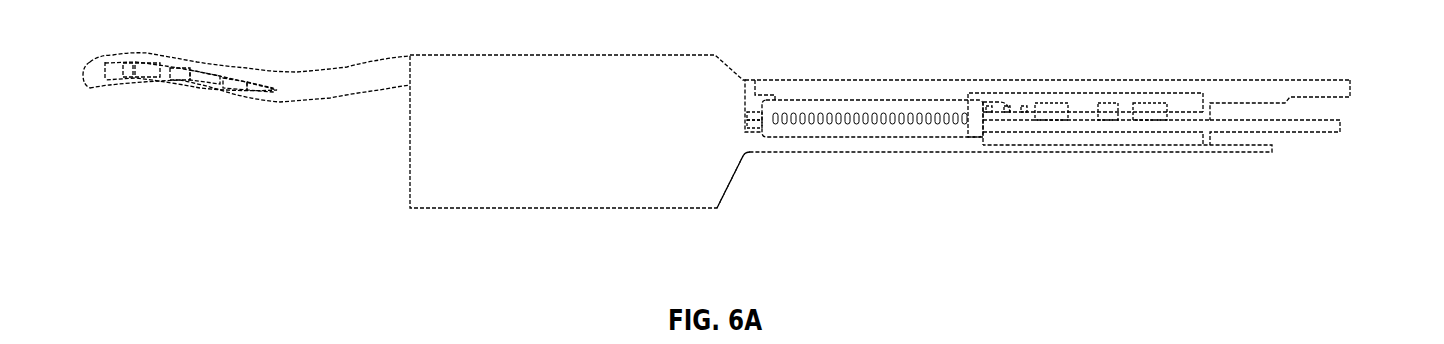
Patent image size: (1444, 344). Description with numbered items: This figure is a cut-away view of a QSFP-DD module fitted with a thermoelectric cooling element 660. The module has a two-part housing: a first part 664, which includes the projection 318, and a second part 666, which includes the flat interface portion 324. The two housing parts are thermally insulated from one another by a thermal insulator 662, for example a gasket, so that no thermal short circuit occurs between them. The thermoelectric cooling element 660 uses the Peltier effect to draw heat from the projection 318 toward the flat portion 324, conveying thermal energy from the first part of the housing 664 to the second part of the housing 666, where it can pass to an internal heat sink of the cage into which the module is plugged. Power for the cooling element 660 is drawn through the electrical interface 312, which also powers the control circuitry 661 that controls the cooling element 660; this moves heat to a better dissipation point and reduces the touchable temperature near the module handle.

The electrical interface 312 is at (1340, 125).
The projection 318 is at (593, 208).
The flat interface portion 324 is at (998, 80).
The thermoelectric cooling element 660 is at (890, 100).
The control circuitry 661 is at (1043, 128).
The thermal insulator 662 is at (1180, 108).
The first part of the housing 664 is at (735, 180).
The second part of the housing 666 is at (830, 80).